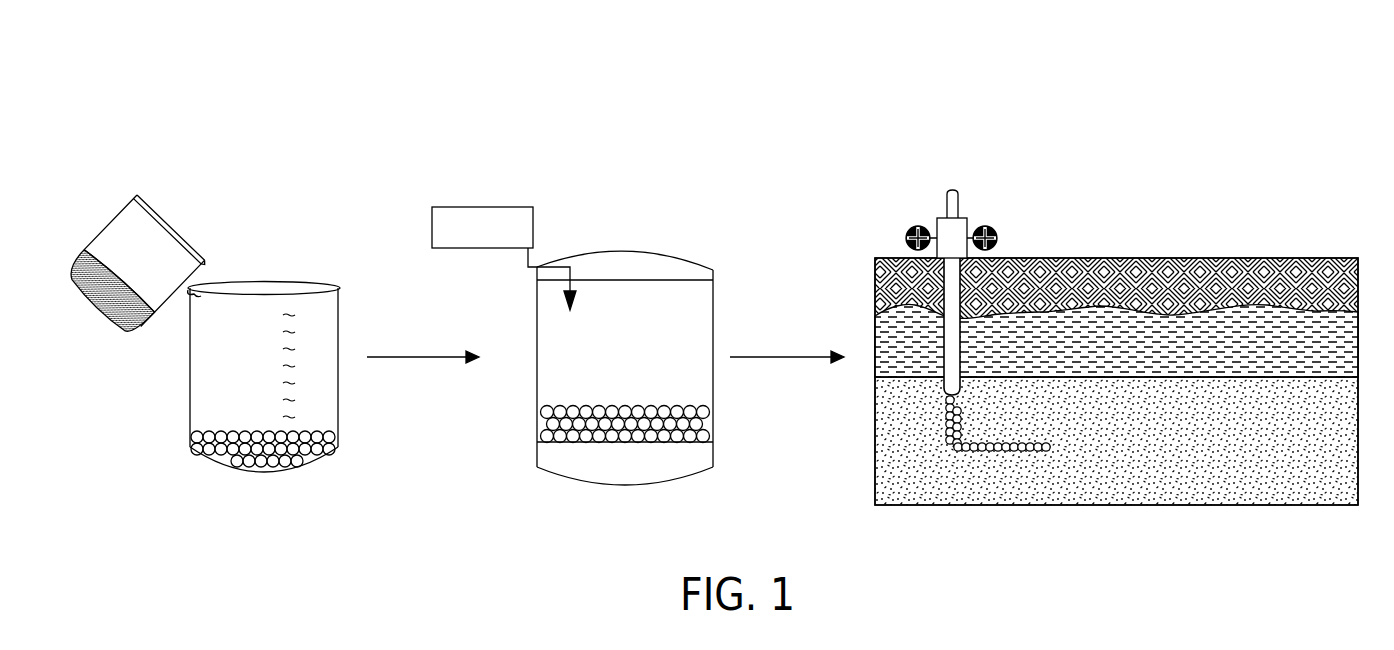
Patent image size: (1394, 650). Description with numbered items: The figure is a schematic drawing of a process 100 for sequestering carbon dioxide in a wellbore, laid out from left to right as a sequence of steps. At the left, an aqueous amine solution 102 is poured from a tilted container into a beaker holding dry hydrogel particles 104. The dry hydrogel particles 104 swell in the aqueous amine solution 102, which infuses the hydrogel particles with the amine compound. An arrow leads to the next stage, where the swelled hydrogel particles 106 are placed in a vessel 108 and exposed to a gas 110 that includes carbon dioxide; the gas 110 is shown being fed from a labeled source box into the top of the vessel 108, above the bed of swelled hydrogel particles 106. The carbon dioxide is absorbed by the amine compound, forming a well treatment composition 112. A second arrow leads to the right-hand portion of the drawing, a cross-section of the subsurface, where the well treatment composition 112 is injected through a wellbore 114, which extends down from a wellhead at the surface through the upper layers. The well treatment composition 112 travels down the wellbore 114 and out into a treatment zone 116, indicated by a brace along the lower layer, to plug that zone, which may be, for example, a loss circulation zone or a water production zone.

The process 100 is at (1073, 277).
The aqueous amine solution 102 is at (105, 318).
The dry hydrogel particles 104 is at (237, 465).
The swelled hydrogel particles 106 is at (540, 415).
The vessel 108 is at (627, 250).
The gas 110 is at (468, 205).
The well treatment composition 112 is at (1048, 455).
The wellbore 114 is at (946, 335).
The treatment zone 116 is at (865, 377).